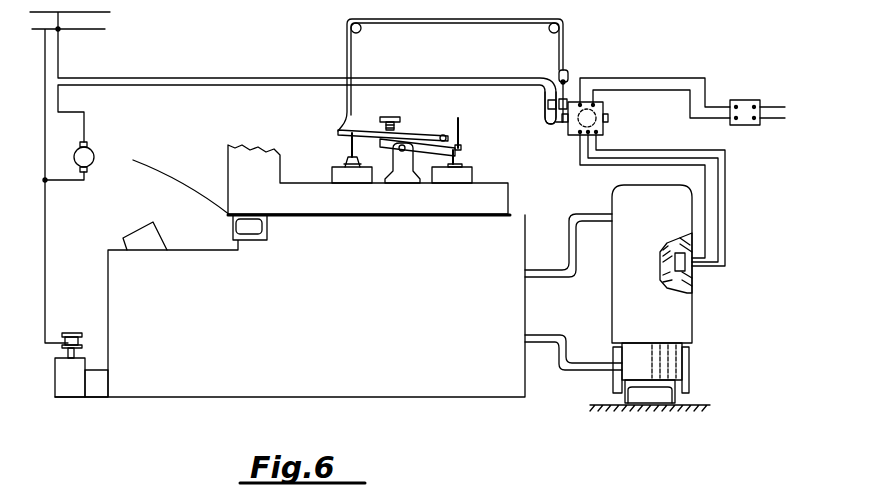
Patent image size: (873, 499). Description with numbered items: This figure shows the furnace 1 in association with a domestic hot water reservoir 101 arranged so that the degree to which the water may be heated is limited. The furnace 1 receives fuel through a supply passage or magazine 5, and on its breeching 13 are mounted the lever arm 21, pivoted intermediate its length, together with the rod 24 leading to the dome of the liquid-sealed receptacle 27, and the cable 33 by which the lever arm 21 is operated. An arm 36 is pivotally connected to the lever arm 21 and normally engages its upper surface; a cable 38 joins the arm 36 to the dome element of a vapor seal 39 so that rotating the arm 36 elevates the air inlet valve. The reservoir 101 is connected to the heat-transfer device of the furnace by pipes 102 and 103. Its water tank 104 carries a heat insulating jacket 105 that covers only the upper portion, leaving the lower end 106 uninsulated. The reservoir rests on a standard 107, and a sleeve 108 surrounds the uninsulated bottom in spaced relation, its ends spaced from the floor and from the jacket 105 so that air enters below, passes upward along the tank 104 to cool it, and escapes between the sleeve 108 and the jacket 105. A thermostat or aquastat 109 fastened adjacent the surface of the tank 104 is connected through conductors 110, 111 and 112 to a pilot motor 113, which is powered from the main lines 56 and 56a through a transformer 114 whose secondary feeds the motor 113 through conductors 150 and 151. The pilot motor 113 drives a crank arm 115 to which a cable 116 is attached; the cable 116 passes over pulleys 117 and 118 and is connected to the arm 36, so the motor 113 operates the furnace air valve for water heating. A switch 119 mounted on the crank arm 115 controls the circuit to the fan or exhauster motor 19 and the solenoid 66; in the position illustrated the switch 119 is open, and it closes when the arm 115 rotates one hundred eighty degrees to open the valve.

The furnace 1 is at (153, 390).
The supply passage or magazine 5 is at (152, 238).
The breeching 13 is at (498, 198).
The fan motor 19 is at (98, 155).
The lever arm 21 is at (417, 148).
The rod 24 is at (458, 155).
The receptacle 27 is at (470, 176).
The cable 33 is at (461, 130).
The lever or arm 36 is at (378, 126).
The cable 38 is at (350, 140).
The vapor seal 39 is at (332, 168).
The main line 56 is at (82, 12).
The main line 56a is at (90, 30).
The solenoid 66 is at (97, 320).
The domestic hot water reservoir 101 is at (700, 306).
The pipe 102 is at (572, 330).
The pipe 103 is at (538, 272).
The water tank 104 is at (693, 282).
The heat insulating jacket 105 is at (690, 320).
The lower end 106 is at (662, 331).
The standard 107 is at (690, 403).
The sleeve 108 is at (689, 370).
The thermostat or aquastat 109 is at (675, 262).
The conductor 110 is at (712, 202).
The conductor 111 is at (723, 210).
The conductor 112 is at (727, 223).
The pilot motor 113 is at (608, 122).
The transformer 114 is at (745, 106).
The crank arm 115 is at (553, 126).
The cable 116 is at (568, 45).
The pulley 117 is at (548, 30).
The pulley 118 is at (361, 28).
The switch 119 is at (547, 110).
The conductor 150 is at (641, 91).
The conductor 151 is at (670, 78).